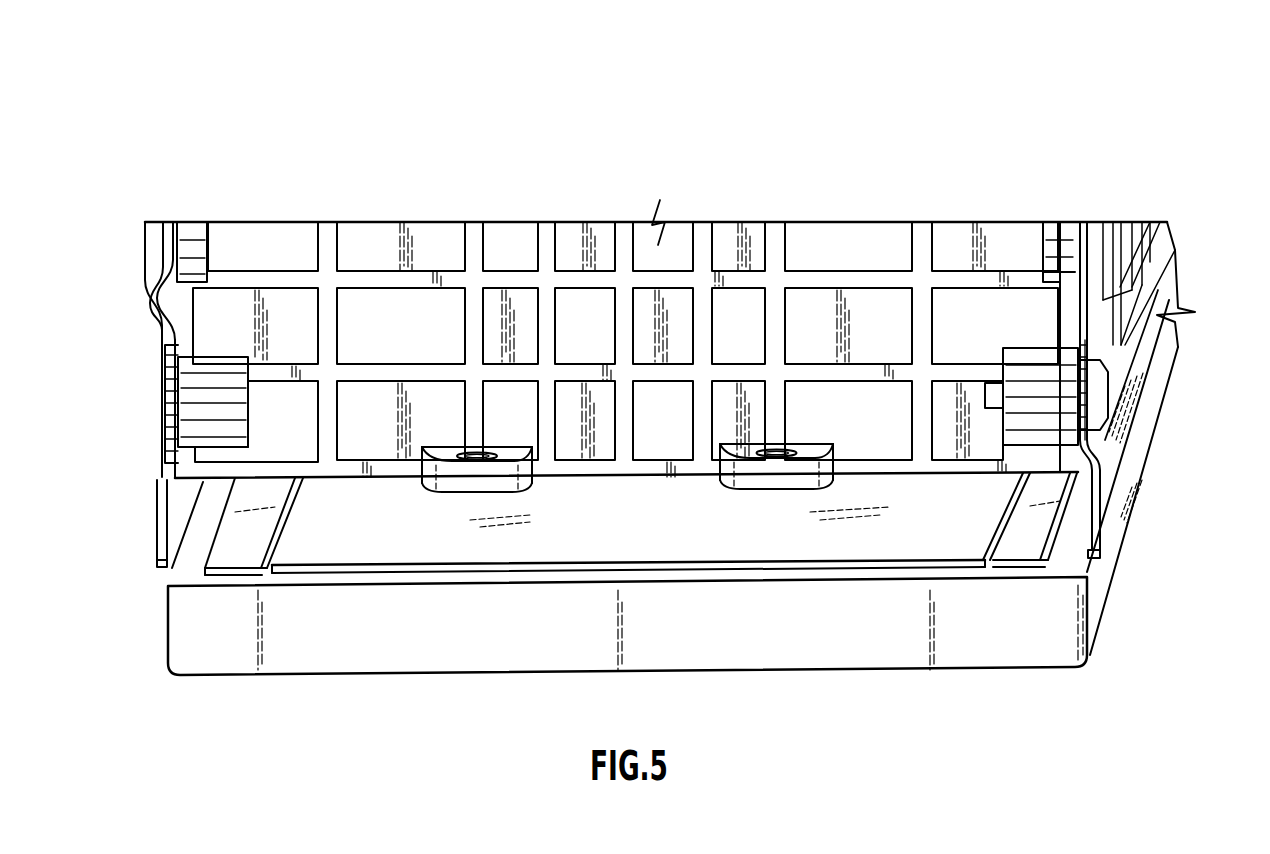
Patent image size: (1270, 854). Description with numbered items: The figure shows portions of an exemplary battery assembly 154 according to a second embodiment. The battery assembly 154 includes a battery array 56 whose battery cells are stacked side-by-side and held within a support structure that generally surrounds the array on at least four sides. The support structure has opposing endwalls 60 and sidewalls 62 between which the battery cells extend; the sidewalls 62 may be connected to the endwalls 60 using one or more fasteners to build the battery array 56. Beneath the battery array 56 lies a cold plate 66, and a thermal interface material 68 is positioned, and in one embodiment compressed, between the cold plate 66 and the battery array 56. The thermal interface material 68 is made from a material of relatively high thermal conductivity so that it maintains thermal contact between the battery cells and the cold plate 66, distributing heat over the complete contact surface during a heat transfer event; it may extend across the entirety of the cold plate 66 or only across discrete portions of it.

The battery assembly 154 is at (640, 138).
The battery array 56 is at (980, 190).
The endwalls 60 is at (365, 235).
The sidewalls 62 is at (155, 320).
The cold plate 66 is at (578, 643).
The thermal interface material 68 is at (710, 543).